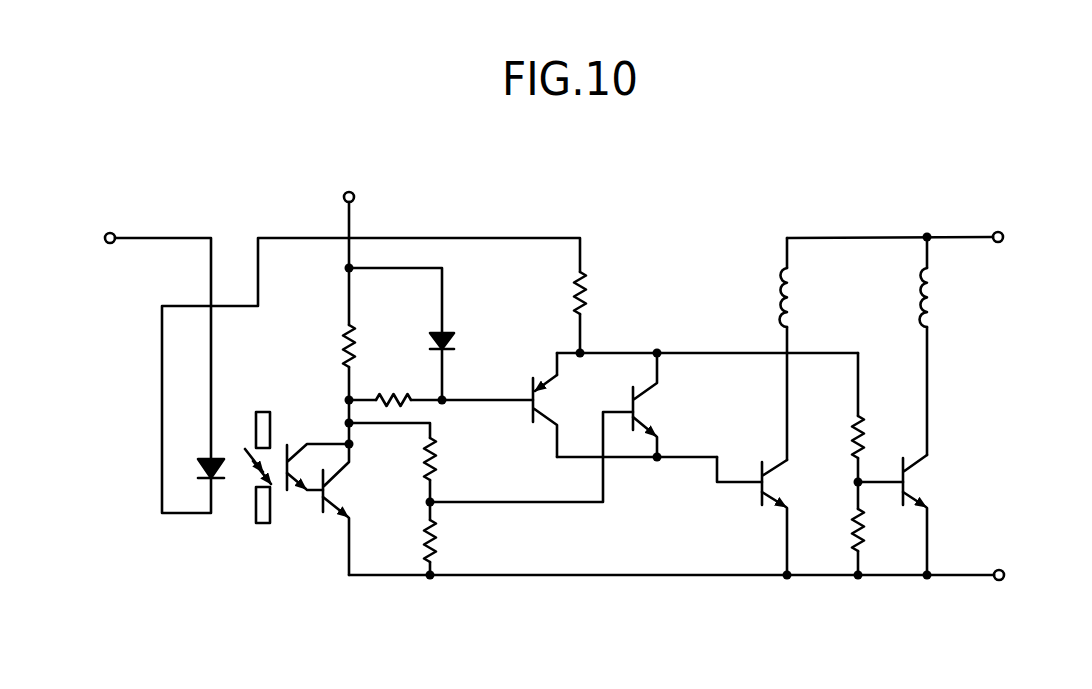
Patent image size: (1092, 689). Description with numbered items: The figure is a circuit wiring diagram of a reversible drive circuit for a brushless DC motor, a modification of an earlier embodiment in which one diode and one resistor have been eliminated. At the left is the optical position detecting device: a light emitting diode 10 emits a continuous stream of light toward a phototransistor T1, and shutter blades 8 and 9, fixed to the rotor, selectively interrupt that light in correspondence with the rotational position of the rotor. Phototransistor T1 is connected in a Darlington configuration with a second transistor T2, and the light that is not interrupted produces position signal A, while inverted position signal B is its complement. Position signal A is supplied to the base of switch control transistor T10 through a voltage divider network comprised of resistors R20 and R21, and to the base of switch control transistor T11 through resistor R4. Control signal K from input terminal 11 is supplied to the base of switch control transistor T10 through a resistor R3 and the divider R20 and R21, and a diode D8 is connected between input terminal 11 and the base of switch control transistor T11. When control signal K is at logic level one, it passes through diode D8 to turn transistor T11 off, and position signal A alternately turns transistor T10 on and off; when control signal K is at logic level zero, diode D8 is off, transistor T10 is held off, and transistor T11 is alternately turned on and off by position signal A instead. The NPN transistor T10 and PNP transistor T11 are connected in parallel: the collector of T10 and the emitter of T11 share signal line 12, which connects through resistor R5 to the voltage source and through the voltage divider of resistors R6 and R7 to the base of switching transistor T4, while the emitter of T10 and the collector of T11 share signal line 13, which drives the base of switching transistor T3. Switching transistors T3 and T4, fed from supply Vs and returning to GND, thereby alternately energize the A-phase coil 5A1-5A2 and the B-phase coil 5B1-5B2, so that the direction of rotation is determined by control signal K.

The shutter blade 8 is at (262, 411).
The shutter blade 9 is at (263, 524).
The light emitting diode 10 is at (197, 470).
The input terminal 11 is at (349, 192).
The signal line 12 is at (716, 351).
The signal line 13 is at (627, 462).
The control signal K is at (349, 216).
The position signal A is at (345, 402).
The inverted position signal B is at (557, 445).
The supply voltage terminal Vs is at (914, 237).
The ground terminal GND is at (709, 575).
The phototransistor T1 is at (294, 483).
The transistor T2 is at (330, 490).
The switching transistor T3 is at (771, 481).
The switching transistor T4 is at (913, 484).
The switch control transistor T10 is at (640, 411).
The switch control transistor T11 is at (546, 403).
The resistor R3 is at (341, 331).
The resistor R4 is at (402, 395).
The resistor R5 is at (573, 284).
The resistor R6 is at (848, 424).
The resistor R7 is at (848, 525).
The resistor R20 is at (440, 455).
The resistor R21 is at (440, 537).
The diode D8 is at (455, 345).
The A-phase coil 5A1-5A2 is at (797, 293).
The B-phase coil 5B1-5B2 is at (937, 293).